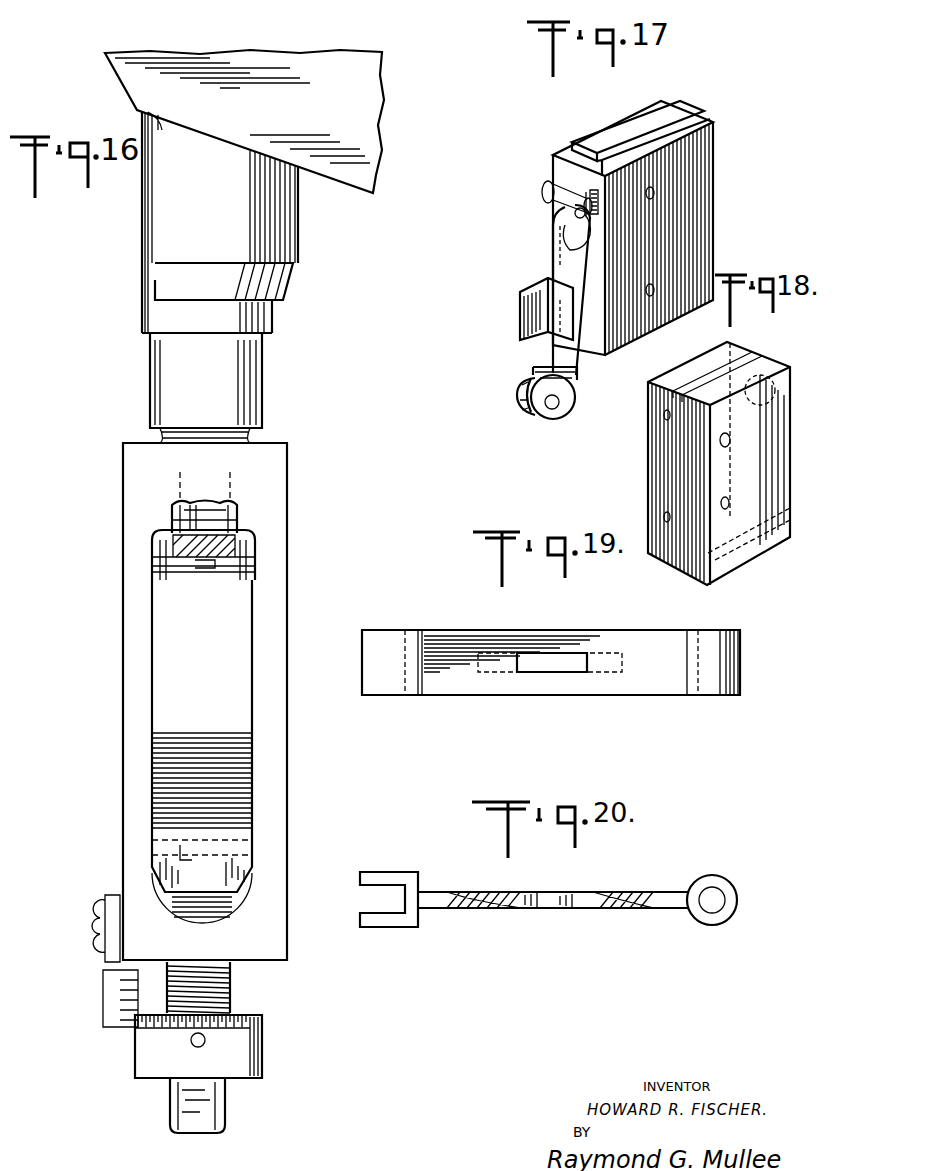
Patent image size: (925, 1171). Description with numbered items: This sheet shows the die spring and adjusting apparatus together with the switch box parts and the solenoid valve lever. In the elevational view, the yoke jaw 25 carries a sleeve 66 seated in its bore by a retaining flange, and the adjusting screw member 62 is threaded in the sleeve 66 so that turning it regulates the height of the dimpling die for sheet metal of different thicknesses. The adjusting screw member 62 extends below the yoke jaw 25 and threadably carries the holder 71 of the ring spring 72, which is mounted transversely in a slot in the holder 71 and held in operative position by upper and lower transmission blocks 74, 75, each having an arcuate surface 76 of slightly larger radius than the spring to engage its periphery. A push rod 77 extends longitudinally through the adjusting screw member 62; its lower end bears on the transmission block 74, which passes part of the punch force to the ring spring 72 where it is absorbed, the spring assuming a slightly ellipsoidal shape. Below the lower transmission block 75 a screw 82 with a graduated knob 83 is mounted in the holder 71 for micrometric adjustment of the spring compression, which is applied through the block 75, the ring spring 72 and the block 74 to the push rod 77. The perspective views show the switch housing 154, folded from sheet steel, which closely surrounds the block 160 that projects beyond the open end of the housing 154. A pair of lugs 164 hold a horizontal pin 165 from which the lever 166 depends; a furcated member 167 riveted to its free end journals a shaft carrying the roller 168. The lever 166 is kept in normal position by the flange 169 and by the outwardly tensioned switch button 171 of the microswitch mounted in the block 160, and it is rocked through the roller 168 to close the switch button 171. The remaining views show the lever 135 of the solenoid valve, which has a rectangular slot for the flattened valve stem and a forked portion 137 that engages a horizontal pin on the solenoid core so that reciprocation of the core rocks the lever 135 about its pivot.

In FIG. 16, the yoke jaw 25 is at (262, 84).
In FIG. 16, the sleeve 66 is at (297, 223).
In FIG. 16, the adjusting screw member 62 is at (160, 368).
In FIG. 16, the ring spring 72 is at (213, 689).
In FIG. 16, the push rod 77 is at (212, 508).
In FIG. 16, the transmission block 74 is at (250, 548).
In FIG. 16, the arcuate surface 76 is at (207, 557).
In FIG. 16, the transmission block 75 is at (243, 867).
In FIG. 16, the holder 71 is at (208, 935).
In FIG. 16, the screw 82 is at (228, 1001).
In FIG. 16, the graduated knob 83 is at (260, 1052).
In FIG. 17, the switch housing 154 is at (597, 130).
In FIG. 18, the switch housing 154 is at (679, 373).
In FIG. 17, the lugs 164 is at (547, 181).
In FIG. 17, the horizontal pin 165 is at (547, 195).
In FIG. 17, the lever 166 is at (563, 238).
In FIG. 17, the switch button 171 is at (575, 255).
In FIG. 17, the flange 169 is at (522, 298).
In FIG. 17, the block 160 is at (597, 350).
In FIG. 17, the furcated member 167 is at (538, 372).
In FIG. 17, the roller 168 is at (525, 405).
In FIG. 19, the lever 135 is at (660, 630).
In FIG. 20, the lever 135 is at (632, 893).
In FIG. 19, the forked portion 137 is at (388, 637).
In FIG. 20, the forked portion 137 is at (352, 882).